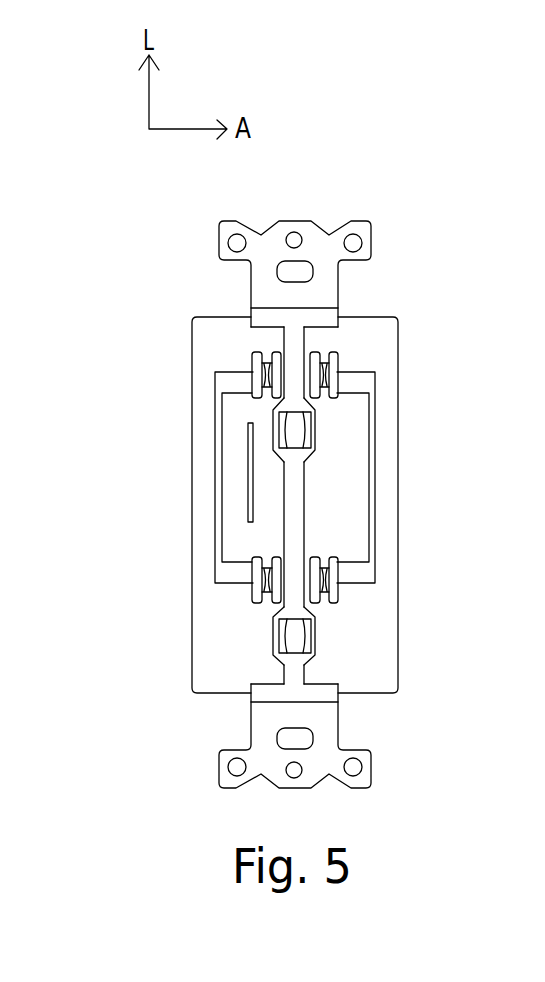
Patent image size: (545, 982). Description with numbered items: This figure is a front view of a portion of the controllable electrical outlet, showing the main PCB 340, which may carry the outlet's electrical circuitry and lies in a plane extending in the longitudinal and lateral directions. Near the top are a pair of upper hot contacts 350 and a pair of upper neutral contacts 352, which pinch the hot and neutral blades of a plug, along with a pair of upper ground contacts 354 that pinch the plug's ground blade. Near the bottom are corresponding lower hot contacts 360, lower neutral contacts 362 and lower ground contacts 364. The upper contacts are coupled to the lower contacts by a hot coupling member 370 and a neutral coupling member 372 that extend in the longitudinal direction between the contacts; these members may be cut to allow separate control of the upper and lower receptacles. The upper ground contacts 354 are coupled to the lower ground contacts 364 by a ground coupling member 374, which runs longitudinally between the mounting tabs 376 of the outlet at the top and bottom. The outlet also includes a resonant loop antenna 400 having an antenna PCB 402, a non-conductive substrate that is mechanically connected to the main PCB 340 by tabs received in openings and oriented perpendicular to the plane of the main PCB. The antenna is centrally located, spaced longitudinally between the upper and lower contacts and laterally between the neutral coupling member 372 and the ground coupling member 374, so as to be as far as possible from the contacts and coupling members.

The main PCB 340 is at (200, 358).
The upper hot contacts 350 is at (338, 358).
The upper neutral contacts 352 is at (252, 363).
The upper ground contacts 354 is at (312, 428).
The lower hot contacts 360 is at (333, 590).
The lower neutral contacts 362 is at (257, 601).
The lower ground contacts 364 is at (313, 637).
The hot coupling member 370 is at (375, 520).
The neutral coupling member 372 is at (215, 545).
The ground coupling member 374 is at (292, 496).
The mounting tabs 376 is at (313, 252).
The resonant loop antenna 400 is at (232, 488).
The antenna PCB 402 is at (250, 459).